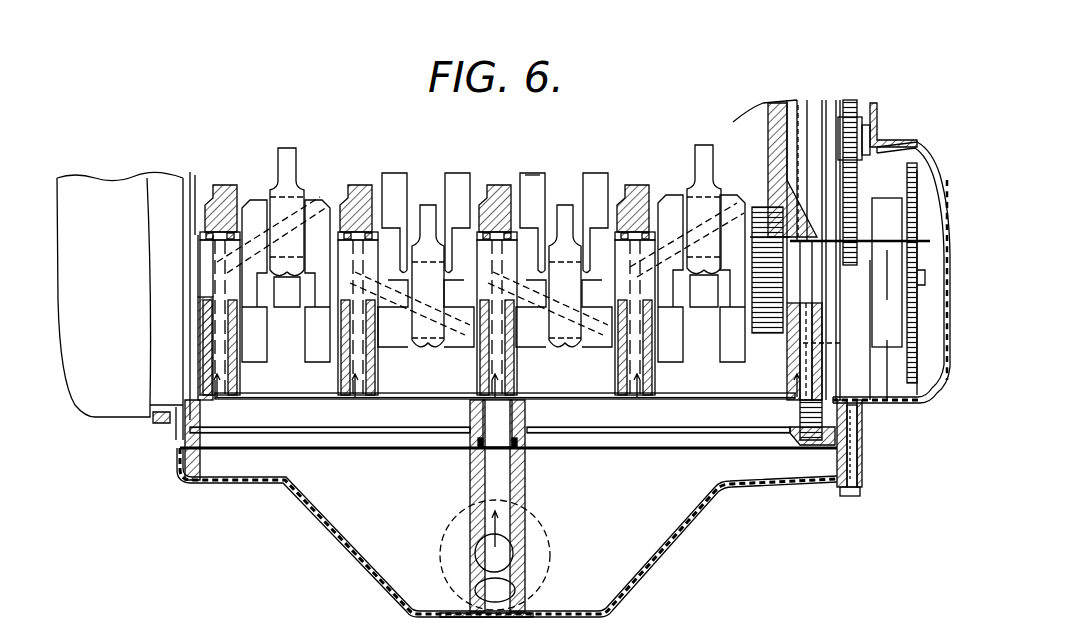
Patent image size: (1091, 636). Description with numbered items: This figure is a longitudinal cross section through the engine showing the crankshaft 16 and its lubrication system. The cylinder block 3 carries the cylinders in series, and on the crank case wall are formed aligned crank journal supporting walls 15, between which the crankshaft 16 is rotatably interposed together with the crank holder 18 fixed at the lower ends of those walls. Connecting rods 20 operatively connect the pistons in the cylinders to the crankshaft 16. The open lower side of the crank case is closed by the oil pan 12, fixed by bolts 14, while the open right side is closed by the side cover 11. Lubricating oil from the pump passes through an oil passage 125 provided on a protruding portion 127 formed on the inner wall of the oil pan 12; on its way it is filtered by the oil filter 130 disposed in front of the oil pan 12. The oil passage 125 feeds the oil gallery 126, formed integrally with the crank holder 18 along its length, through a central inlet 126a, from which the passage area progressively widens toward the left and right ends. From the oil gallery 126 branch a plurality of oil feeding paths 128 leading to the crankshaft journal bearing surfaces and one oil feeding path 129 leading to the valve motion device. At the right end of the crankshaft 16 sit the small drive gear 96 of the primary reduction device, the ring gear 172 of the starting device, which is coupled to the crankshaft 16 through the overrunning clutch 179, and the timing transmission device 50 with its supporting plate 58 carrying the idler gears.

The cylinder block 3 is at (877, 110).
The side cover 11 is at (949, 214).
The oil pan 12 is at (673, 543).
The bolt 14 is at (850, 496).
The crank journal supporting wall 15 is at (228, 195).
The crankshaft 16 is at (532, 185).
The crank holder 18 is at (587, 432).
The connecting rod 20 is at (287, 152).
The timing transmission device 50 is at (853, 94).
The supporting plate 58 is at (832, 100).
The drive gear 96 is at (770, 333).
The oil passage 125 is at (476, 557).
The oil gallery 126 is at (499, 508).
The inlet 126a is at (503, 428).
The protruding portion 127 is at (522, 583).
The oil feeding path 128 is at (228, 378).
The oil feeding path 129 is at (841, 344).
The oil filter 130 is at (540, 528).
The ring gear 172 is at (917, 172).
The overrunning clutch 179 is at (890, 194).